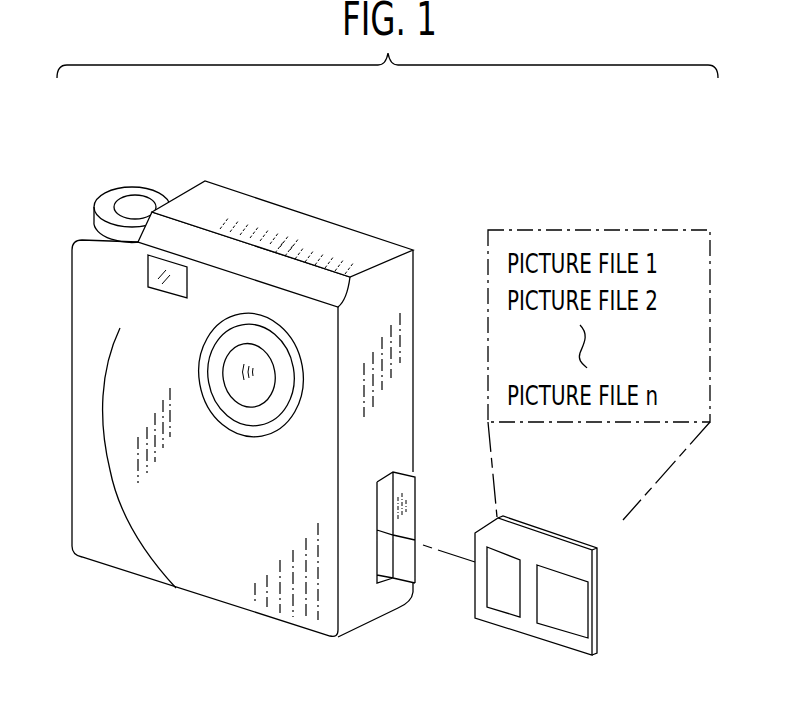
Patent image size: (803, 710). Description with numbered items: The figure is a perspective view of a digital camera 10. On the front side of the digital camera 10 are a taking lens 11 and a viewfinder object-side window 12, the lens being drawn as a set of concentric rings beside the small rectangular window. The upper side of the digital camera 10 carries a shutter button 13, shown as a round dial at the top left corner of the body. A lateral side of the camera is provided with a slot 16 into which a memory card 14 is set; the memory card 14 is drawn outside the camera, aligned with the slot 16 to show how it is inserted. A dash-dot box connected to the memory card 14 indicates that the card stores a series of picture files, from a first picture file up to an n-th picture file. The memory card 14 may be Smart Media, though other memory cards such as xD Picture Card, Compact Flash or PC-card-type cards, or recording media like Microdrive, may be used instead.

The digital camera 10 is at (325, 197).
The taking lens 11 is at (257, 386).
The viewfinder object-side window 12 is at (163, 288).
The shutter button 13 is at (124, 192).
The memory card 14 is at (595, 600).
The slot 16 is at (386, 580).